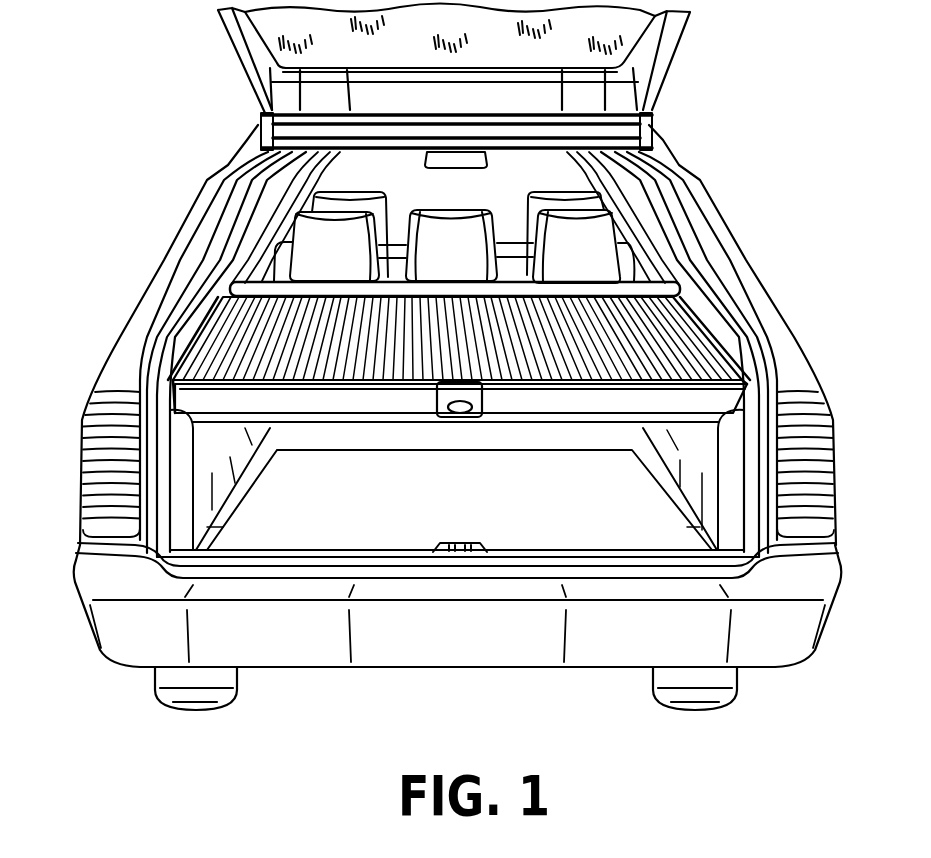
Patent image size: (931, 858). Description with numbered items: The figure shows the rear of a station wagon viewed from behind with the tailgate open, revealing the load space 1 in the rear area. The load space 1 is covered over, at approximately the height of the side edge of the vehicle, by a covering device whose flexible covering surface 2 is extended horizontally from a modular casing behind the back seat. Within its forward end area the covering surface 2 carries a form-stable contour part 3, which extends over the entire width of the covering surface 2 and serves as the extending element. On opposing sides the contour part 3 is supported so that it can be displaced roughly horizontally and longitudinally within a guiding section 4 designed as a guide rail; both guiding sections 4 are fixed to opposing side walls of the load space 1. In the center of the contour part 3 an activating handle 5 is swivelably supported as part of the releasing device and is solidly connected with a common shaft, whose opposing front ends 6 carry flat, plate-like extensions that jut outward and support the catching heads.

The load space 1 is at (500, 523).
The covering surface 2 is at (683, 342).
The contour part 3 is at (362, 414).
The guiding section 4 is at (703, 310).
The activating handle 5 is at (441, 417).
The front ends of the shaft 6 is at (745, 382).